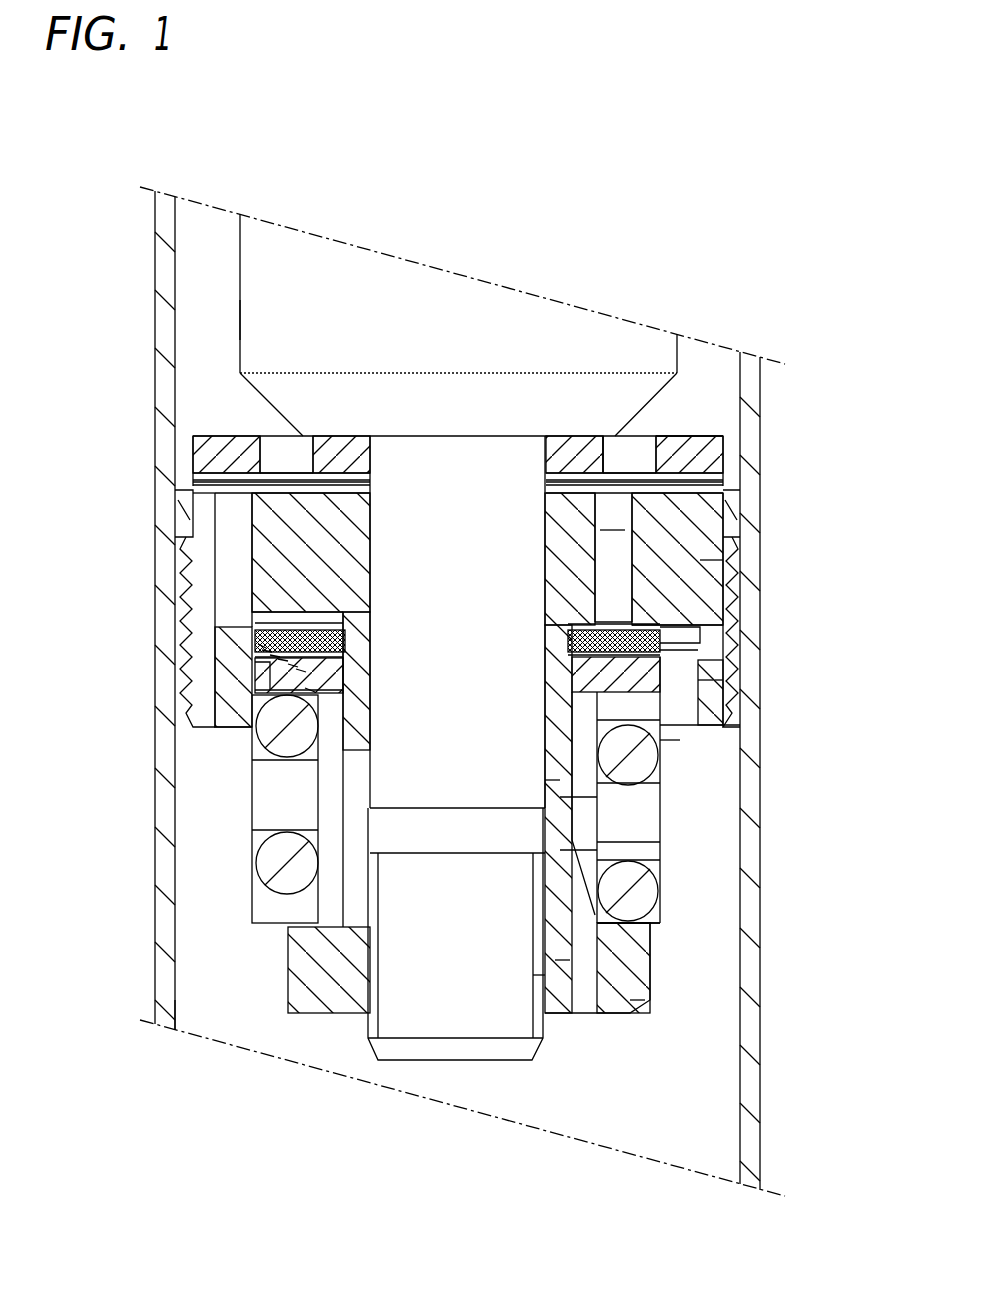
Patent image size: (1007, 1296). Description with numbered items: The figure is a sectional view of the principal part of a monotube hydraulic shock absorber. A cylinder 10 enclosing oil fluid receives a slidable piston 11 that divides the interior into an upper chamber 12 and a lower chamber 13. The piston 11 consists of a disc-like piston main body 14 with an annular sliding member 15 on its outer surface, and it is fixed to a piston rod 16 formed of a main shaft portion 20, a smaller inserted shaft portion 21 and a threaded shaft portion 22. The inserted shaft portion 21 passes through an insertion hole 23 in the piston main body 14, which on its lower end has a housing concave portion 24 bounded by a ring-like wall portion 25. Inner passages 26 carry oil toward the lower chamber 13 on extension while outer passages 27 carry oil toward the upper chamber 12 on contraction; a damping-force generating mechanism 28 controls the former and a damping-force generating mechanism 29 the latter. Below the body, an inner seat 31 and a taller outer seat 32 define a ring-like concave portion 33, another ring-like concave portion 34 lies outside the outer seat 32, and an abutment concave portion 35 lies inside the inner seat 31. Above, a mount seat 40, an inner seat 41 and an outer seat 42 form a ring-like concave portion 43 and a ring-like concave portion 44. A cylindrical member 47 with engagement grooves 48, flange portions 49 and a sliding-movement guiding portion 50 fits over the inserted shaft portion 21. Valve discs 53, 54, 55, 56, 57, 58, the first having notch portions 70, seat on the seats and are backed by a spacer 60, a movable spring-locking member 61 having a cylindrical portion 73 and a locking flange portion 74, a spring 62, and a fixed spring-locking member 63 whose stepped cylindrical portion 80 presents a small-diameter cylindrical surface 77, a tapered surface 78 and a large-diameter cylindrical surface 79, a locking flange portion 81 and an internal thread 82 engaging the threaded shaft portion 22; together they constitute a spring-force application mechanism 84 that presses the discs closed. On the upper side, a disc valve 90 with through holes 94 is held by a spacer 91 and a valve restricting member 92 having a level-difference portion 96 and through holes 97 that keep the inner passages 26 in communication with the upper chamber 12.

The cylinder 10 is at (155, 241).
The piston 11 is at (732, 490).
The upper chamber 12 is at (205, 222).
The lower chamber 13 is at (232, 1026).
The piston main body 14 is at (183, 510).
The sliding member 15 is at (180, 535).
The piston rod 16 is at (238, 322).
The main shaft portion 20 is at (518, 315).
The inserted shaft portion 21 is at (460, 473).
The threaded shaft portion 22 is at (430, 1042).
The insertion hole 23 is at (372, 527).
The housing concave portion 24 is at (669, 683).
The ring-like wall portion 25 is at (722, 684).
The inner passage 26 is at (624, 531).
The outer passage 27 is at (215, 572).
The damping-force generating mechanism 28 is at (562, 785).
The damping-force generating mechanism 29 is at (175, 490).
The inner seat 31 is at (635, 650).
The outer seat 32 is at (625, 636).
The ring-like concave portion 33 is at (647, 455).
The ring-like concave portion 34 is at (645, 617).
The abutment concave portion 35 is at (543, 612).
The mount seat 40 is at (456, 392).
The inner seat 41 is at (215, 610).
The outer seat 42 is at (200, 482).
The ring-like concave portion 43 is at (305, 490).
The ring-like concave portion 44 is at (253, 627).
The cylindrical member 47 is at (352, 762).
The engagement groove 48 is at (258, 640).
The flange portion 49 is at (255, 633).
The sliding-movement guiding portion 50 is at (300, 700).
The valve disc 53 is at (262, 646).
The valve disc 54 is at (268, 651).
The valve disc 55 is at (275, 656).
The valve disc 56 is at (283, 660).
The valve disc 57 is at (292, 665).
The valve disc 58 is at (300, 670).
The spacer 60 is at (310, 690).
The movable spring-locking member 61 is at (669, 728).
The spring 62 is at (662, 897).
The fixed spring-locking member 63 is at (654, 970).
The notch portion 70 is at (702, 570).
The cylindrical portion 73 is at (662, 755).
The locking flange portion 74 is at (679, 745).
The small-diameter cylindrical surface 77 is at (572, 800).
The tapered surface 78 is at (572, 850).
The large-diameter cylindrical surface 79 is at (655, 932).
The stepped cylindrical portion 80 is at (562, 967).
The locking flange portion 81 is at (637, 1002).
The internal thread 82 is at (530, 977).
The spring-force application mechanism 84 is at (250, 893).
The disc valve 90 is at (722, 442).
The spacer 91 is at (607, 620).
The valve restricting member 92 is at (686, 435).
The through hole 94 is at (622, 620).
The level-difference portion 96 is at (728, 478).
The through hole 97 is at (607, 436).